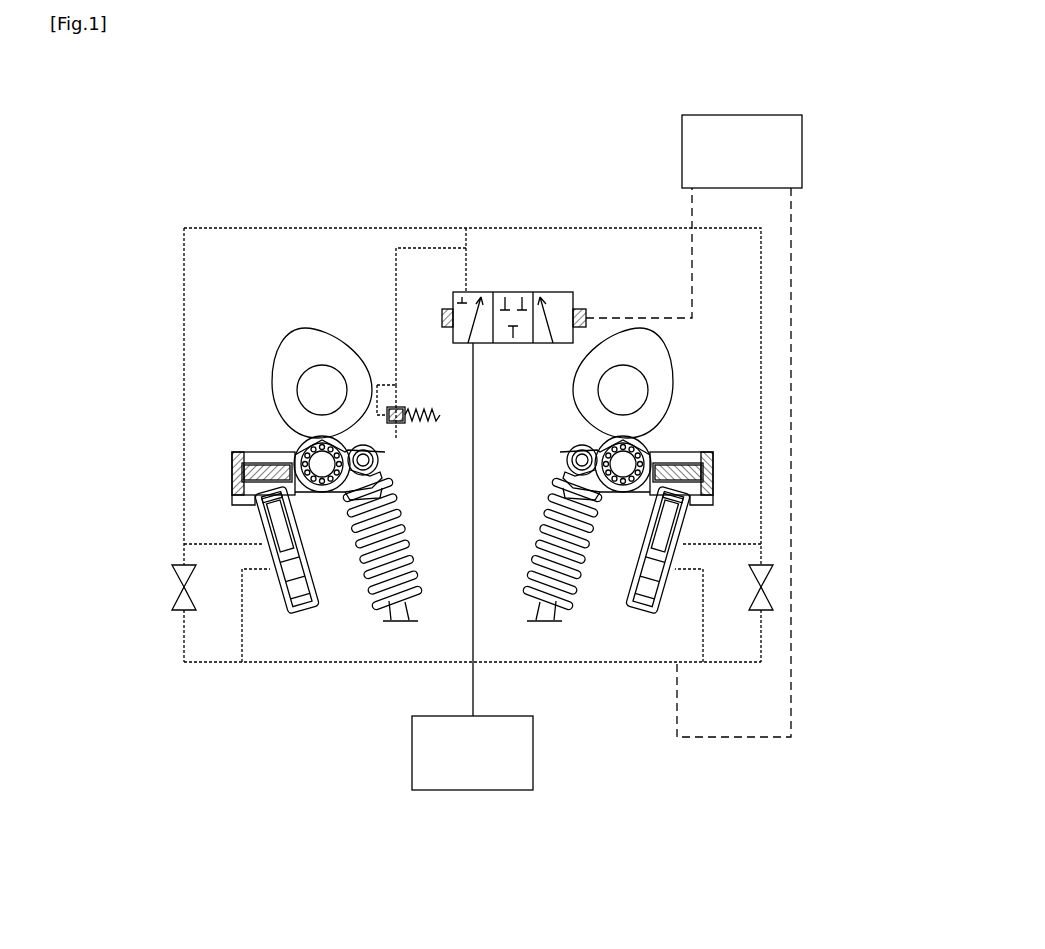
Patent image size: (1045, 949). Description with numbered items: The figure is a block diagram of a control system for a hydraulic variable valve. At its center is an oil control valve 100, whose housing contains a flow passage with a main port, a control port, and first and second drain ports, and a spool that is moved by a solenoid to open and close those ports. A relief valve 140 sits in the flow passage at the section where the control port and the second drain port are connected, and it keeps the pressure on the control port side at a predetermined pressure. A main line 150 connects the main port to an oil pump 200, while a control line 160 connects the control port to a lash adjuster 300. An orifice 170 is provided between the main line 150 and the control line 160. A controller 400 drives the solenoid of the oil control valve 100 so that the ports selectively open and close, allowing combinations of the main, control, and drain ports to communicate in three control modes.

The oil control valve 100 is at (517, 270).
The relief valve 140 is at (383, 376).
The main line 150 is at (472, 635).
The control line 160 is at (392, 228).
The orifice 170 is at (172, 592).
The oil pump 200 is at (473, 790).
The lash adjuster 300 is at (275, 600).
The controller 400 is at (802, 150).